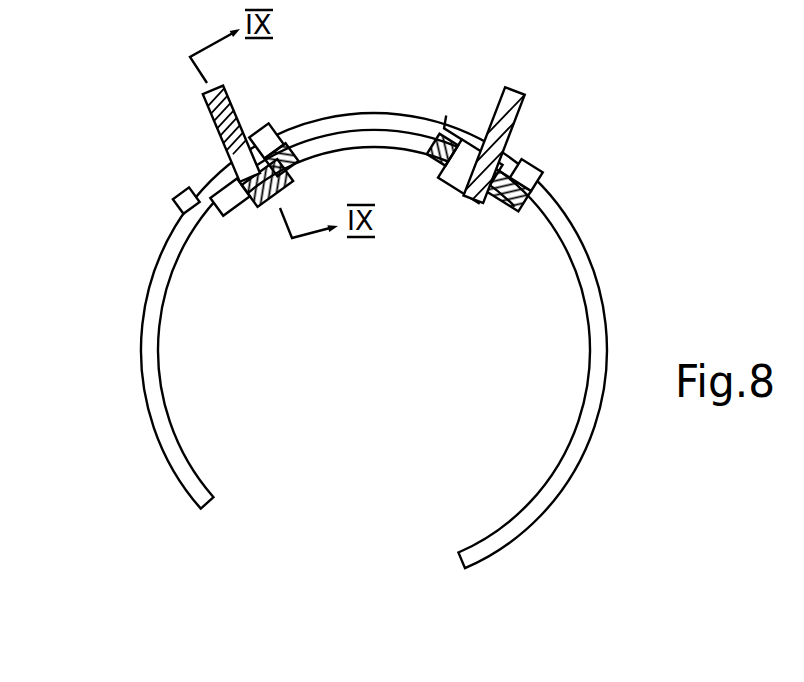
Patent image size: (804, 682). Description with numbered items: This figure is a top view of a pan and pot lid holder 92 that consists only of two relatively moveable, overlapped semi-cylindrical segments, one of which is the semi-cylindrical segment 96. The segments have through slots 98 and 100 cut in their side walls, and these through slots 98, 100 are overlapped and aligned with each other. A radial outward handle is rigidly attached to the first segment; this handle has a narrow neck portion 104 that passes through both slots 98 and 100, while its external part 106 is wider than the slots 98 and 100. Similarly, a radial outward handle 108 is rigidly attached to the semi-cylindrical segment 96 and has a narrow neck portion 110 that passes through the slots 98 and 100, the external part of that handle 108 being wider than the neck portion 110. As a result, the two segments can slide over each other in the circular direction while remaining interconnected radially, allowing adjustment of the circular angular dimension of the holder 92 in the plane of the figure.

The pan and pot lid holder 92 is at (288, 550).
The semi-cylindrical segment 96 is at (185, 195).
The through slot 98 is at (530, 177).
The through slot 100 is at (231, 200).
The narrow neck portion 104 is at (270, 127).
The external part 106 is at (232, 98).
The radial outward handle 108 is at (538, 106).
The narrow neck portion 110 is at (505, 147).